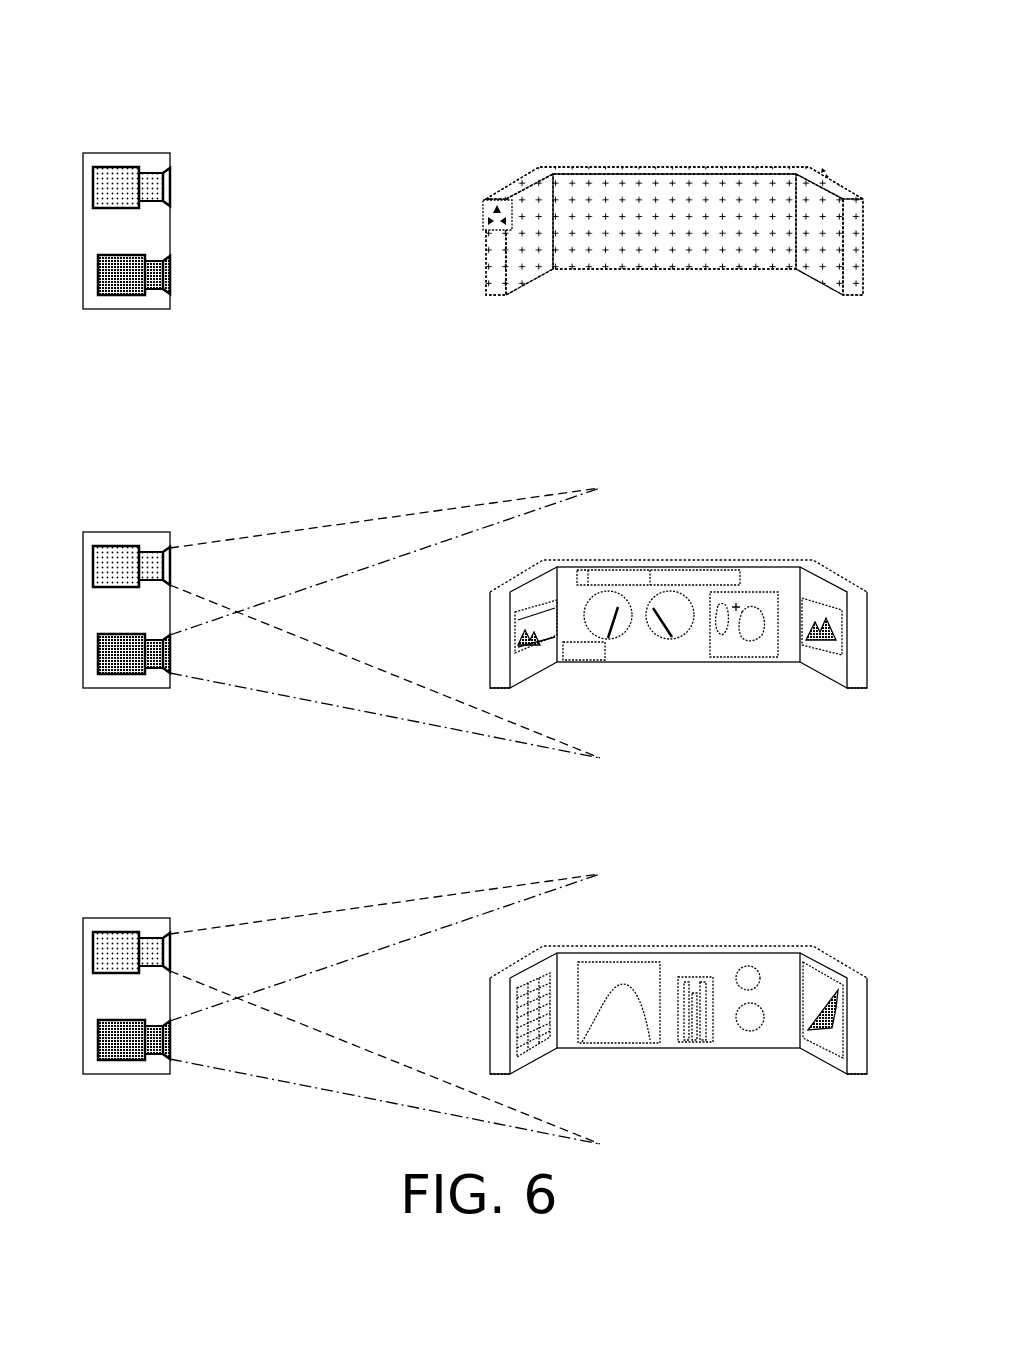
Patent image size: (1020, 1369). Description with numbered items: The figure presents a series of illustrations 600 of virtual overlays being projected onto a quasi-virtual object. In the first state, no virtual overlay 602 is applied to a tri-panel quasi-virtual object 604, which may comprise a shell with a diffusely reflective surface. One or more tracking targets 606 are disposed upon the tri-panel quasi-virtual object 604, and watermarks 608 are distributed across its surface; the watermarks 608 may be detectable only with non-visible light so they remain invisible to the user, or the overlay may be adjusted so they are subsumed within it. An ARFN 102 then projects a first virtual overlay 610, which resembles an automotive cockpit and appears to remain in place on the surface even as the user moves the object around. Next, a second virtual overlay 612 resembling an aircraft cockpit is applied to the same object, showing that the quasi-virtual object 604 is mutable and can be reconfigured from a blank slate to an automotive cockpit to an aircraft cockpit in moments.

The series of illustrations of virtual overlays projected onto quasi-virtual objects 600 is at (759, 51).
The no virtual overlay state 602 is at (240, 100).
The tri-panel quasi-virtual object 604 is at (530, 165).
The tracking target 606 is at (482, 214).
The watermarks 608 is at (674, 270).
The ARFN 102 is at (127, 310).
The first virtual overlay 610 is at (261, 503).
The second virtual overlay 612 is at (286, 885).